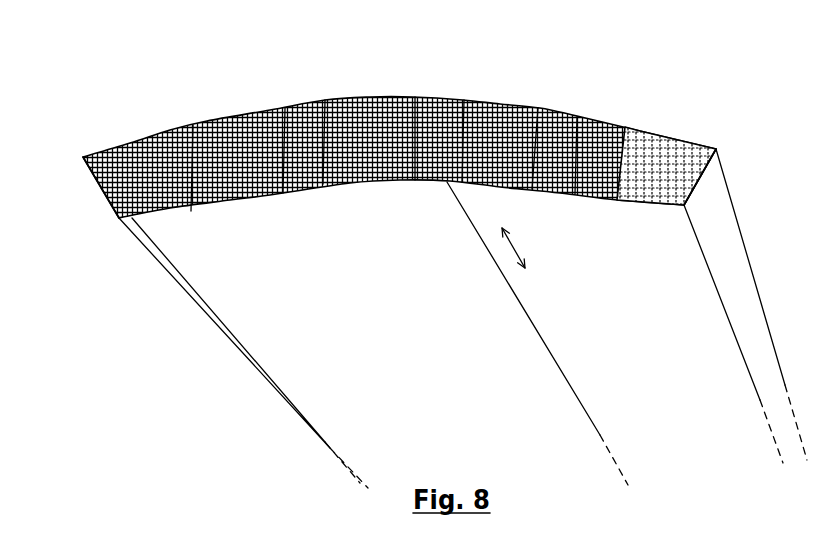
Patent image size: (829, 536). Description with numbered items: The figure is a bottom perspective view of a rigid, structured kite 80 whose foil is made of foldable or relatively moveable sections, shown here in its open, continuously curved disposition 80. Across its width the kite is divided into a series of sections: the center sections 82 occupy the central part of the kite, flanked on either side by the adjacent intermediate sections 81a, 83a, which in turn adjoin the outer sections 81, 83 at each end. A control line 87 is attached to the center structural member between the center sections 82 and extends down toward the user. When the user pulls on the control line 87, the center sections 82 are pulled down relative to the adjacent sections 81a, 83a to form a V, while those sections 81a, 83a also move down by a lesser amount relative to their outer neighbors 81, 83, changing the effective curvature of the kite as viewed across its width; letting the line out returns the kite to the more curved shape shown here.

The kite in continuously curved disposition 80 is at (625, 93).
The outer section 81 is at (110, 150).
The intermediate section 81a is at (207, 122).
The center sections 82 is at (325, 97).
The outer section 83 is at (680, 137).
The intermediate section 83a is at (577, 117).
The control line 87 is at (510, 285).